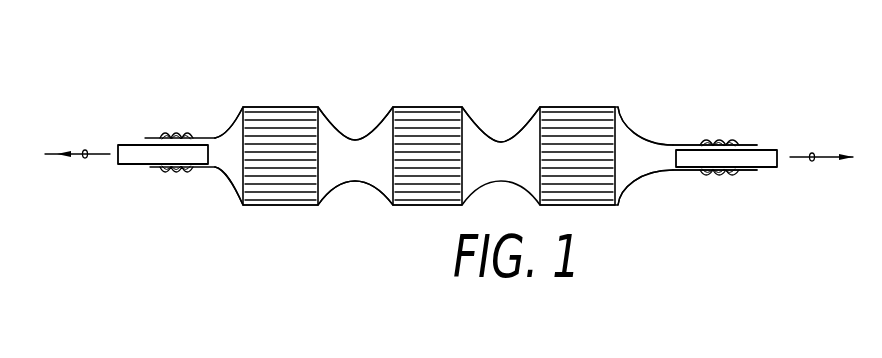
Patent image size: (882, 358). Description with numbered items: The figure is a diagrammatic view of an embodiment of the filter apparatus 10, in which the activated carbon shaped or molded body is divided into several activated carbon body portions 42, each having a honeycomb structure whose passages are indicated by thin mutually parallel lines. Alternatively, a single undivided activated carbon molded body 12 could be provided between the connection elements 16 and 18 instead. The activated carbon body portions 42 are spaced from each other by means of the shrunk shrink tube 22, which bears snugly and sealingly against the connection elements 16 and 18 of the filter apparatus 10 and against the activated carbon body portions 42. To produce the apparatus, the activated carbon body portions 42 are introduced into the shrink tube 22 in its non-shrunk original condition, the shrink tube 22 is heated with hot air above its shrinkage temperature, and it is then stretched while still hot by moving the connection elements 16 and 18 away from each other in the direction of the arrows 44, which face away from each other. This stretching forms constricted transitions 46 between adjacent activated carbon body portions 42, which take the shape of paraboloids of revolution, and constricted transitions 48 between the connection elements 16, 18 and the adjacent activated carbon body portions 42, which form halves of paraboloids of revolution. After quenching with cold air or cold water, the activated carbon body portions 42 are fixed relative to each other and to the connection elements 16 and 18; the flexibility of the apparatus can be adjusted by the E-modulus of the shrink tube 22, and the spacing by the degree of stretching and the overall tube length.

The filter apparatus 10 is at (625, 100).
The activated carbon molded body 12 is at (280, 190).
The connection element 16 is at (133, 167).
The connection element 18 is at (773, 148).
The shrink tube 22 is at (356, 192).
The activated carbon body portion 42 is at (280, 136).
The arrows 44 is at (85, 148).
The constricted transition 46 is at (353, 138).
The constricted transition 48 is at (222, 181).